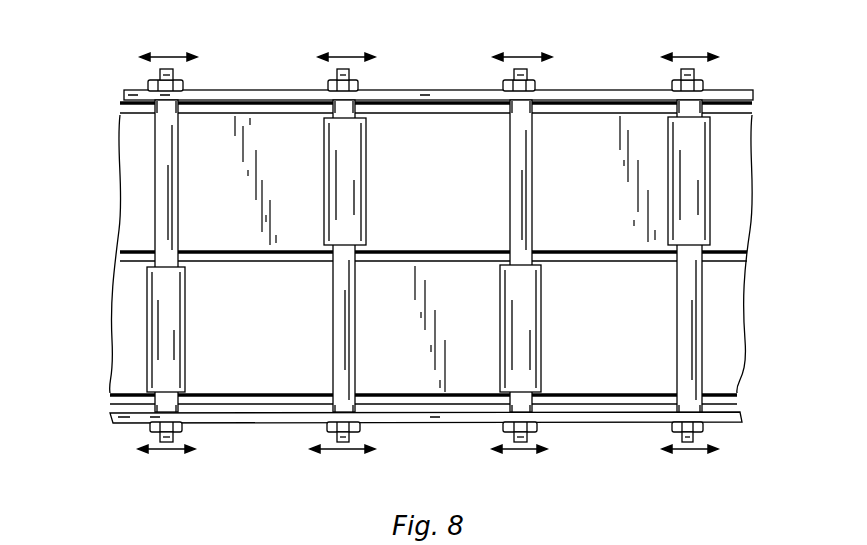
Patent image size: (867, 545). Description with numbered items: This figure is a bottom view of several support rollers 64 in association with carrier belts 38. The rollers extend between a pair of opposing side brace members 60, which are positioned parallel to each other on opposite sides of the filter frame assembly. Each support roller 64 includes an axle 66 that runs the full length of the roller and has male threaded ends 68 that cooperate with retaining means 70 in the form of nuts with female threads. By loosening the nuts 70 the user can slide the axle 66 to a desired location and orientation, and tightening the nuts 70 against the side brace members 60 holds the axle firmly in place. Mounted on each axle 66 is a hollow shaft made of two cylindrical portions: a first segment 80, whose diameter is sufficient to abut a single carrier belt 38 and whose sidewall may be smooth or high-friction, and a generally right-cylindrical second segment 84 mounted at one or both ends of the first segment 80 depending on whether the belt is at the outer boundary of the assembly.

The carrier belt 38 is at (236, 186).
The side brace member 60 is at (270, 90).
The support roller 64 is at (185, 366).
The axle 66 is at (510, 112).
The male threaded end 68 is at (173, 439).
The retaining means 70 is at (358, 85).
The first segment 80 is at (150, 318).
The second segment 84 is at (178, 206).